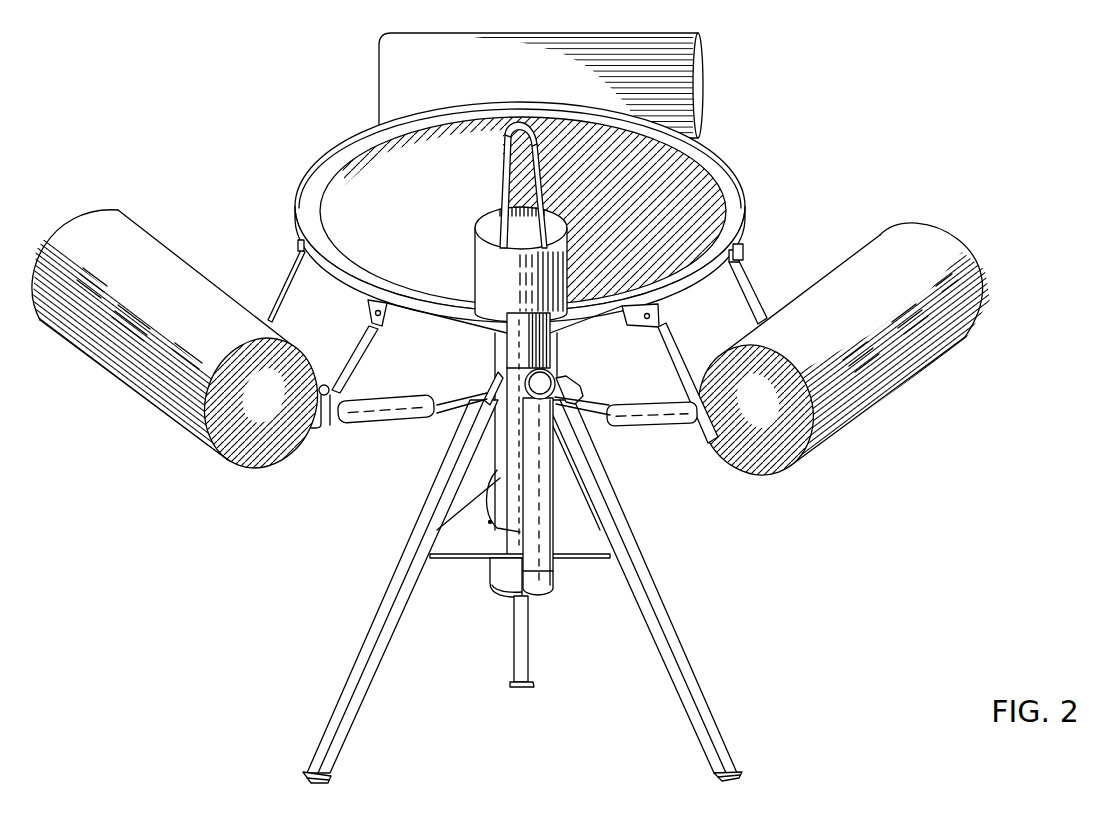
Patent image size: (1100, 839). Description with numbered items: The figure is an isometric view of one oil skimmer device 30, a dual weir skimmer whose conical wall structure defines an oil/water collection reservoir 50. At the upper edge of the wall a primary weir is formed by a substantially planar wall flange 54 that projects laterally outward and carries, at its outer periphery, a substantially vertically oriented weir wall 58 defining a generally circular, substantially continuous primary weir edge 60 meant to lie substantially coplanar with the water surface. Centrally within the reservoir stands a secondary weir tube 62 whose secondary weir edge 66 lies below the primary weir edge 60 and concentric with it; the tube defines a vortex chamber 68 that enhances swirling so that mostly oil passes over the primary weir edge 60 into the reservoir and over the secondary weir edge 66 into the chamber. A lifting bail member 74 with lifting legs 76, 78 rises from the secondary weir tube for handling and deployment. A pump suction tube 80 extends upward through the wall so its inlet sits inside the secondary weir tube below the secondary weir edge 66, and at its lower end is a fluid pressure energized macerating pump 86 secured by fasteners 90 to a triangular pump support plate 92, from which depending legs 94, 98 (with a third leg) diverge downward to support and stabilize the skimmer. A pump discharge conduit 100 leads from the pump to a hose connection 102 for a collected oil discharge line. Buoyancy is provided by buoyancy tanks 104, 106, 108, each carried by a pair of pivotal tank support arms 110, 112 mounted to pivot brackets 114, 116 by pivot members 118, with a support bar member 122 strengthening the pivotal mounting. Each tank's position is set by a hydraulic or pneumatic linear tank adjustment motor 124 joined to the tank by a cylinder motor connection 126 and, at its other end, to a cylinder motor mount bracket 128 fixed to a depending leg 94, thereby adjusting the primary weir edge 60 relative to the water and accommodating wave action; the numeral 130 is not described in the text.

The oil skimmer device 30 is at (895, 93).
The oil/water collection reservoir 50 is at (367, 226).
The substantially planar wall flange 54 is at (742, 203).
The substantially vertically oriented weir wall 58 is at (453, 313).
The primary weir edge 60 is at (724, 158).
The secondary weir tube 62 is at (475, 270).
The secondary weir edge 66 is at (490, 212).
The vortex chamber 68 is at (490, 233).
The lifting bail member 74 is at (512, 120).
The lifting leg 76 is at (502, 160).
The lifting leg 78 is at (543, 182).
The pump suction tube 80 is at (507, 362).
The fluid pressure energized pump 86 is at (492, 562).
The fasteners 90 is at (493, 520).
The pump support plate 92 is at (457, 540).
The depending leg 94 is at (343, 697).
The depending leg 98 is at (705, 697).
The pump discharge conduit 100 is at (548, 478).
The hose connection 102 is at (580, 430).
The buoyancy tank 104 is at (90, 205).
The buoyancy tank 106 is at (698, 77).
The buoyancy tank 108 is at (965, 240).
The pivotal tank support arm 110 is at (674, 352).
The pivotal tank support arm 112 is at (748, 282).
The pivot bracket 114 is at (645, 318).
The pivot bracket 116 is at (367, 312).
The pivot member 118 is at (642, 324).
The support bar member 122 is at (675, 304).
The linear tank adjustment motor 124 is at (347, 408).
The cylinder motor connection 126 is at (326, 380).
The cylinder motor mount bracket 128 is at (456, 424).
The fastener hole 130 is at (380, 326).